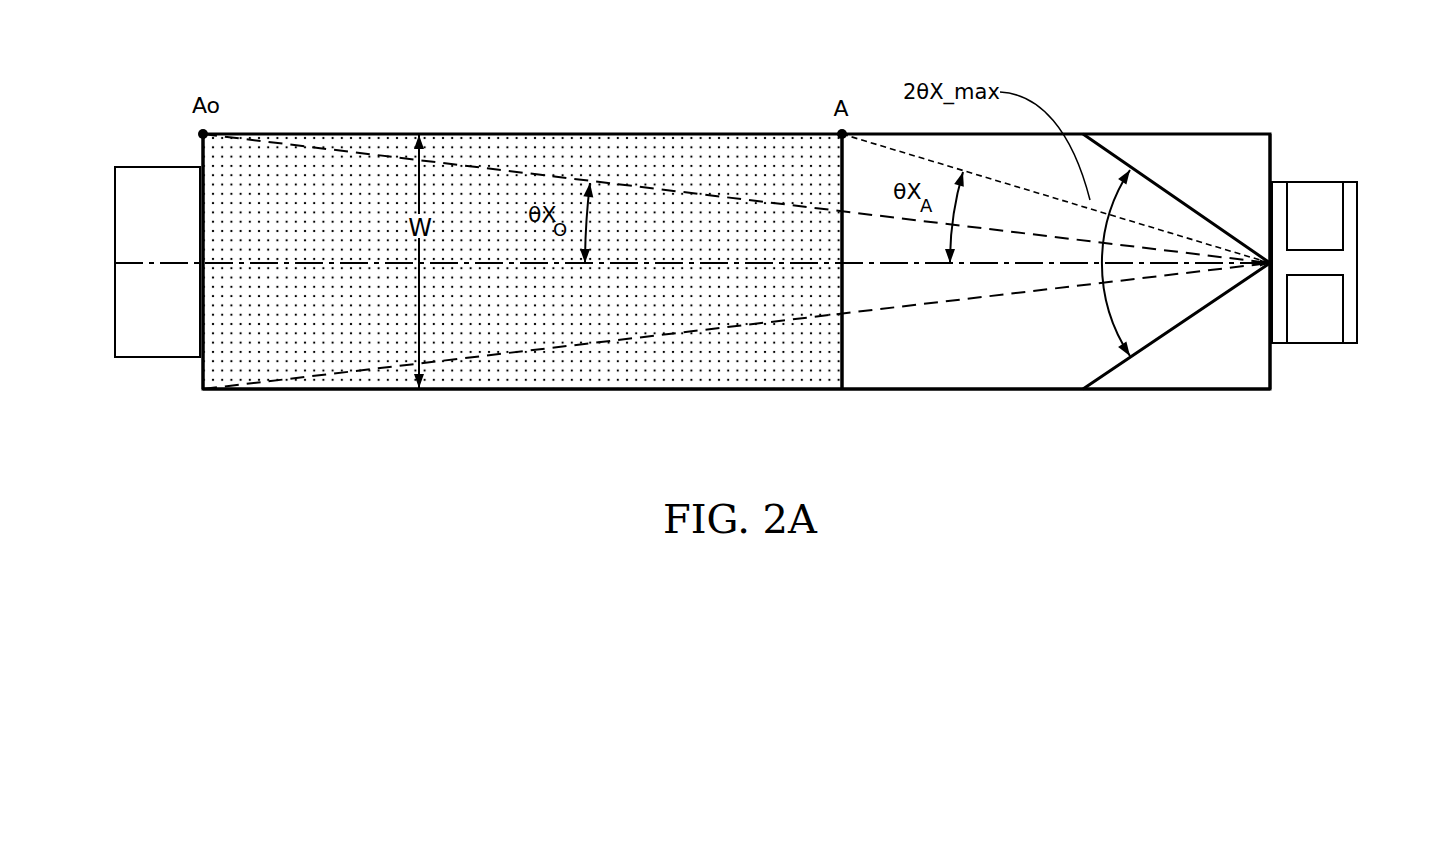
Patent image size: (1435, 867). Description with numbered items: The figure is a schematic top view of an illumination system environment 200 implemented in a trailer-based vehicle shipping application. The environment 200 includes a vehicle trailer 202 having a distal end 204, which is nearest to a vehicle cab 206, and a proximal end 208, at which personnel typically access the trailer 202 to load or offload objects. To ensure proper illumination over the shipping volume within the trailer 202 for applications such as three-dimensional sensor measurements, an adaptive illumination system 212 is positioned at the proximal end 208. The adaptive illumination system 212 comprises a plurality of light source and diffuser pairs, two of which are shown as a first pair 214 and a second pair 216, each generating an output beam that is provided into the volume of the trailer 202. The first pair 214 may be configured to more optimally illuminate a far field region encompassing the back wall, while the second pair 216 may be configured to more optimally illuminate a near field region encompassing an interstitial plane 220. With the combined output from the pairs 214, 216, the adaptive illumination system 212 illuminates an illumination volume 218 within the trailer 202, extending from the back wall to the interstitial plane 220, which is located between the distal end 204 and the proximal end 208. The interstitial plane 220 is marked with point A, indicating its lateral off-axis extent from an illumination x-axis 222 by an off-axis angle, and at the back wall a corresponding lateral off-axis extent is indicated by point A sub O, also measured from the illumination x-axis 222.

The illumination system environment 200 is at (166, 68).
The vehicle trailer 202 is at (564, 128).
The distal end 204 is at (201, 154).
The vehicle cab 206 is at (113, 235).
The proximal end 208 is at (1272, 152).
The adaptive illumination system 212 is at (1358, 259).
The first light source and diffuser pair 214 is at (1298, 319).
The second light source and diffuser pair 216 is at (1298, 228).
The illumination volume 218 is at (570, 328).
The interstitial plane 220 is at (855, 347).
The illumination x-axis 222 is at (153, 278).